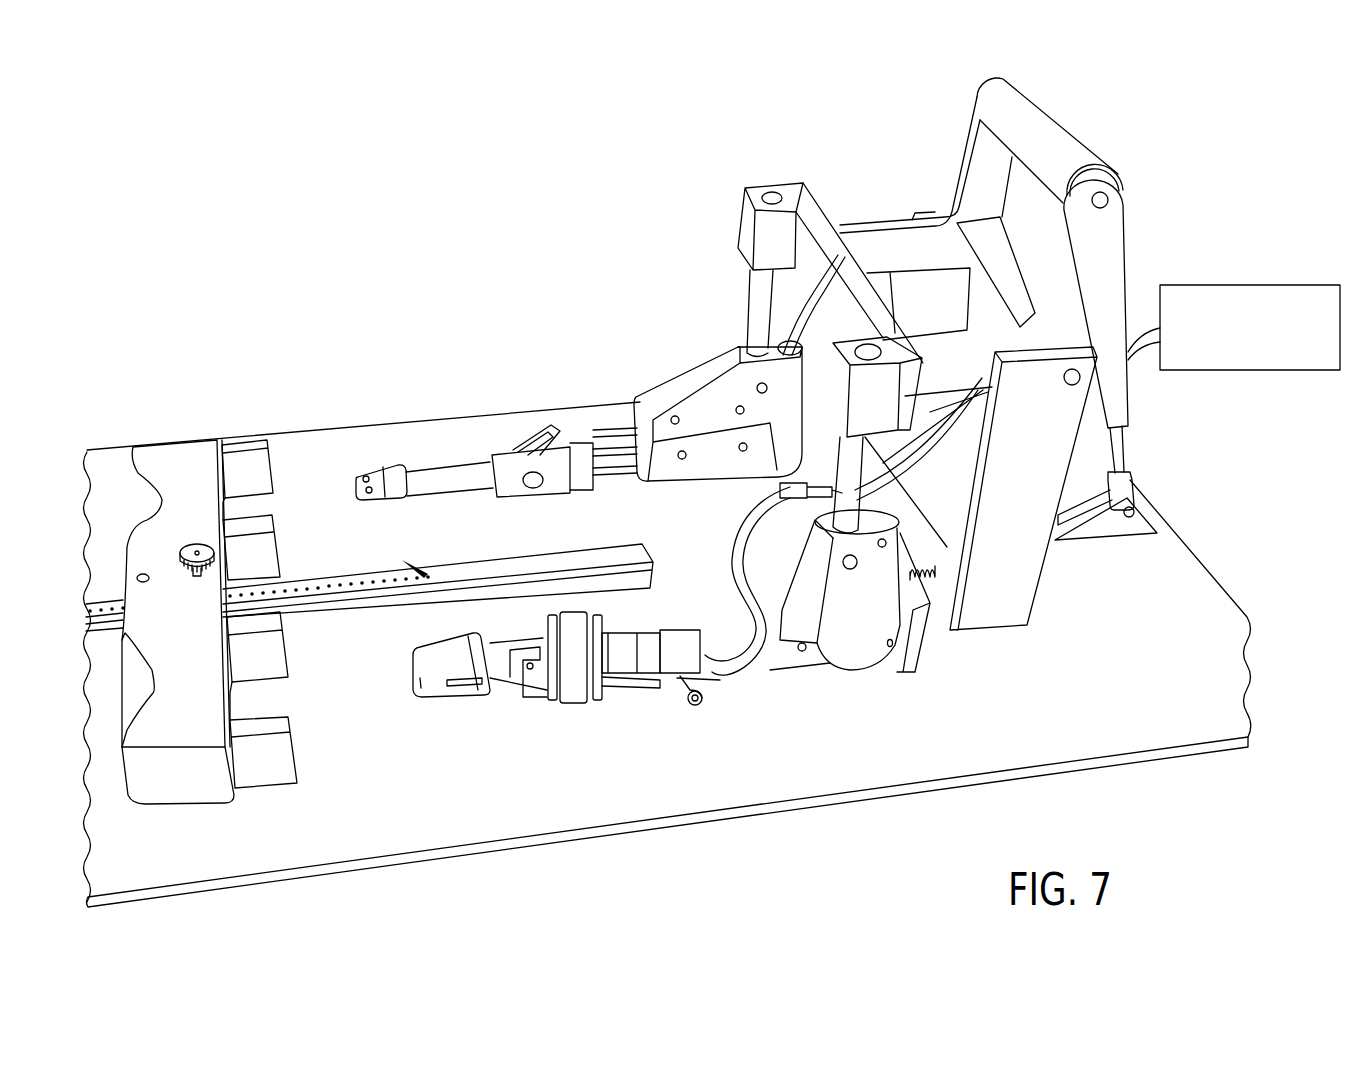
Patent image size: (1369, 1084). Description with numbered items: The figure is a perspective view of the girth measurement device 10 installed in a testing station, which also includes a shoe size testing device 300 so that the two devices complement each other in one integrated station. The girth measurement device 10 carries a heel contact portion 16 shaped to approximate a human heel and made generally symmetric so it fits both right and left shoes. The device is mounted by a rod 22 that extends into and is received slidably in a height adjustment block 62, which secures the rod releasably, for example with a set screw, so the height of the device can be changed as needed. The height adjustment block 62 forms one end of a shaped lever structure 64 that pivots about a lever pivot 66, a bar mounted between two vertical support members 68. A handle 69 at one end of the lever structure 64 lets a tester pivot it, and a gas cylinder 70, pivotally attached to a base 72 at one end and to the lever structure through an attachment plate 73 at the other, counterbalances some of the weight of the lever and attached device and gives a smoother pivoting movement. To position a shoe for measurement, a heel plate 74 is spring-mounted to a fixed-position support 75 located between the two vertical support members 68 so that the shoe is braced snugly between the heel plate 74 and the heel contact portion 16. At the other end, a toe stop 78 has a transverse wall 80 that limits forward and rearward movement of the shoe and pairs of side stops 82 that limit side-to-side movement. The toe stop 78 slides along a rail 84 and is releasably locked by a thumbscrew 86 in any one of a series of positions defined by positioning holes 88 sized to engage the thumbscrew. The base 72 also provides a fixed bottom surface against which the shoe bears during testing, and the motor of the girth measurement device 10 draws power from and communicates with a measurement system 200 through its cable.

The girth measurement device 10 is at (703, 605).
The heel contact portion 16 is at (760, 480).
The rod 22 is at (758, 297).
The height adjustment block 62 is at (750, 227).
The lever structure 64 is at (938, 357).
The lever pivot 66 is at (1070, 385).
The vertical support members 68 is at (913, 217).
The handle 69 is at (1063, 138).
The gas cylinder 70 is at (1125, 408).
The base 72 is at (1200, 577).
The attachment plate 73 is at (1015, 262).
The heel plate 74 is at (918, 652).
The fixed-position support 75 is at (943, 427).
The toe stop 78 is at (163, 452).
The transverse wall 80 is at (223, 501).
The side stops 82 is at (258, 470).
The rail 84 is at (572, 557).
The thumbscrew 86 is at (198, 545).
The positioning holes 88 is at (428, 577).
The measurement system 200 is at (1267, 283).
The shoe size testing device 300 is at (653, 383).